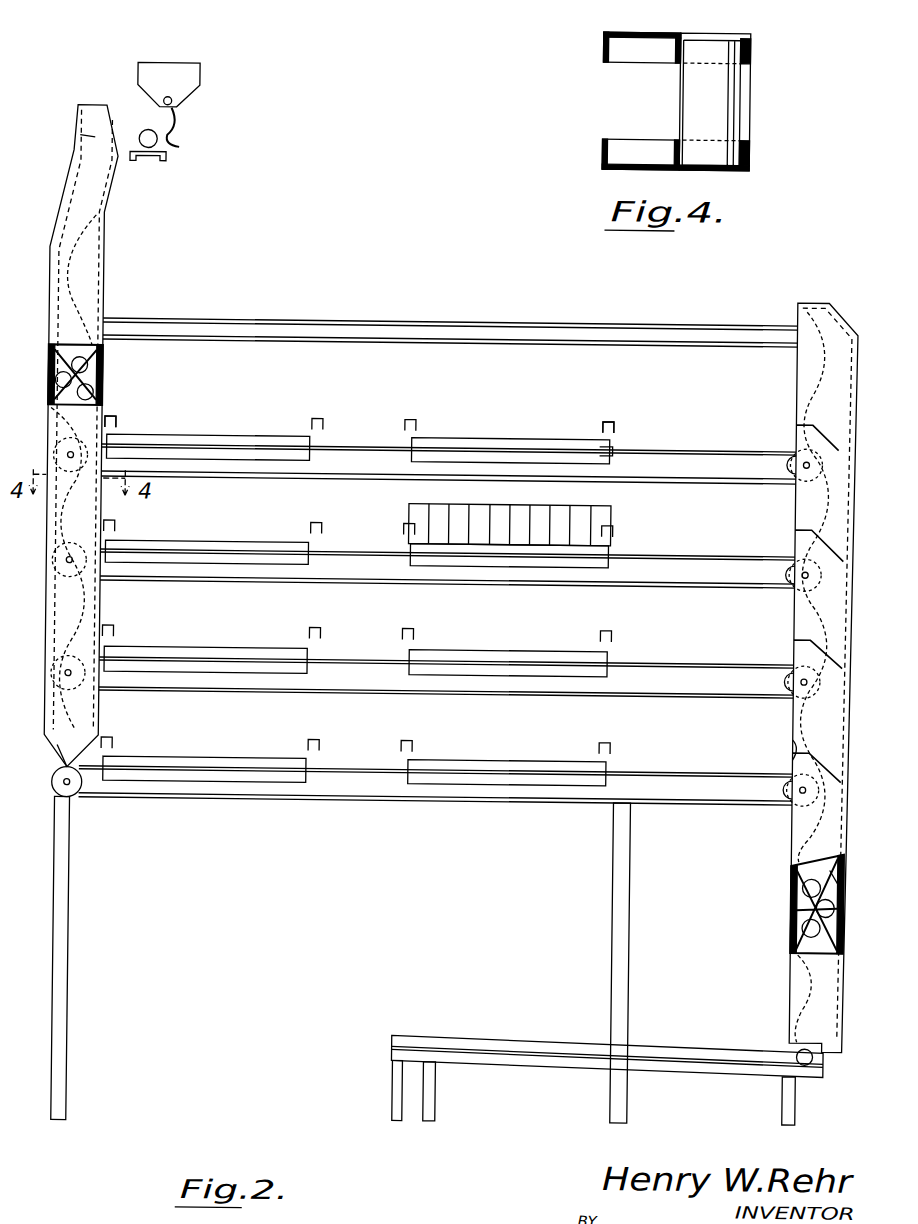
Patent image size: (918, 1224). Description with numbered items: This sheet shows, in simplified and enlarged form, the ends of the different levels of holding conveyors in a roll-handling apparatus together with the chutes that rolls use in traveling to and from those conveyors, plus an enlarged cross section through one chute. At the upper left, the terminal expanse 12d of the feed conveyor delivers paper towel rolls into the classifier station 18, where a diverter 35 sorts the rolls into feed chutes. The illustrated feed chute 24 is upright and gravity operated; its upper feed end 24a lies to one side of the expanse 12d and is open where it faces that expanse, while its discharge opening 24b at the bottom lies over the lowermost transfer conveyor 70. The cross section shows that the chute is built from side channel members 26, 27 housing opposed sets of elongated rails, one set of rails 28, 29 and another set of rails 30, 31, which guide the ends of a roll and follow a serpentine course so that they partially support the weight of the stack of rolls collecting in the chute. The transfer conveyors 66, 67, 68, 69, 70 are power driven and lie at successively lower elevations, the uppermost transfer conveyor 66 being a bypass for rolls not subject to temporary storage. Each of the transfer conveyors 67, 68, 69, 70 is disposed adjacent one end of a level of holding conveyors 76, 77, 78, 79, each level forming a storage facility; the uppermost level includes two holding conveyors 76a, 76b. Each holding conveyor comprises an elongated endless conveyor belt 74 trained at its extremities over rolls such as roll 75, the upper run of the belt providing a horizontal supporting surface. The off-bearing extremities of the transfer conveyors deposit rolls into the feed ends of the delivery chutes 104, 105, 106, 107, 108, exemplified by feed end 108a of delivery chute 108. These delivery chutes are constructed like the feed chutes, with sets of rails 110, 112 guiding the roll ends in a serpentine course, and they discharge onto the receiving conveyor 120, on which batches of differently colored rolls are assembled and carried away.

In FIG. 2, the terminal expanse of feed conveyor 12d is at (146, 161).
In FIG. 2, the classifier station 18 is at (230, 105).
In FIG. 2, the feed chute 24 is at (115, 294).
In FIG. 2, the feed end of feed chute 24a is at (81, 140).
In FIG. 2, the discharge opening of feed chute 24b is at (62, 736).
In FIG. 4, the side channel member 26 is at (612, 33).
In FIG. 4, the side channel member 27 is at (606, 172).
In FIG. 4, the rail 28 is at (674, 50).
In FIG. 4, the rail 29 is at (745, 64).
In FIG. 2, the rail 30 is at (48, 371).
In FIG. 4, the rail 30 is at (675, 152).
In FIG. 2, the rail 31 is at (99, 392).
In FIG. 4, the rail 31 is at (742, 140).
In FIG. 2, the diverter 35 is at (130, 73).
In FIG. 2, the transfer conveyor 66 is at (397, 308).
In FIG. 2, the transfer conveyor 67 is at (353, 438).
In FIG. 2, the transfer conveyor 68 is at (350, 545).
In FIG. 2, the transfer conveyor 69 is at (351, 647).
In FIG. 2, the transfer conveyor 70 is at (352, 754).
In FIG. 2, the conveyor belt 74 is at (516, 440).
In FIG. 2, the roll 75 is at (613, 444).
In FIG. 2, the level of holding conveyors 76 is at (449, 410).
In FIG. 2, the holding conveyor 76a is at (617, 428).
In FIG. 2, the holding conveyor 76b is at (254, 426).
In FIG. 2, the level of holding conveyors 77 is at (632, 530).
In FIG. 2, the level of holding conveyors 78 is at (629, 645).
In FIG. 2, the level of holding conveyors 79 is at (630, 750).
In FIG. 2, the delivery chute 104 is at (841, 310).
In FIG. 2, the delivery chute 105 is at (838, 440).
In FIG. 2, the delivery chute 106 is at (842, 547).
In FIG. 2, the delivery chute 107 is at (841, 659).
In FIG. 2, the delivery chute 108 is at (841, 771).
In FIG. 2, the feed end of delivery chute 108a is at (808, 744).
In FIG. 2, the rails 110 is at (798, 891).
In FIG. 2, the rails 112 is at (842, 879).
In FIG. 2, the receiving conveyor 120 is at (526, 1031).